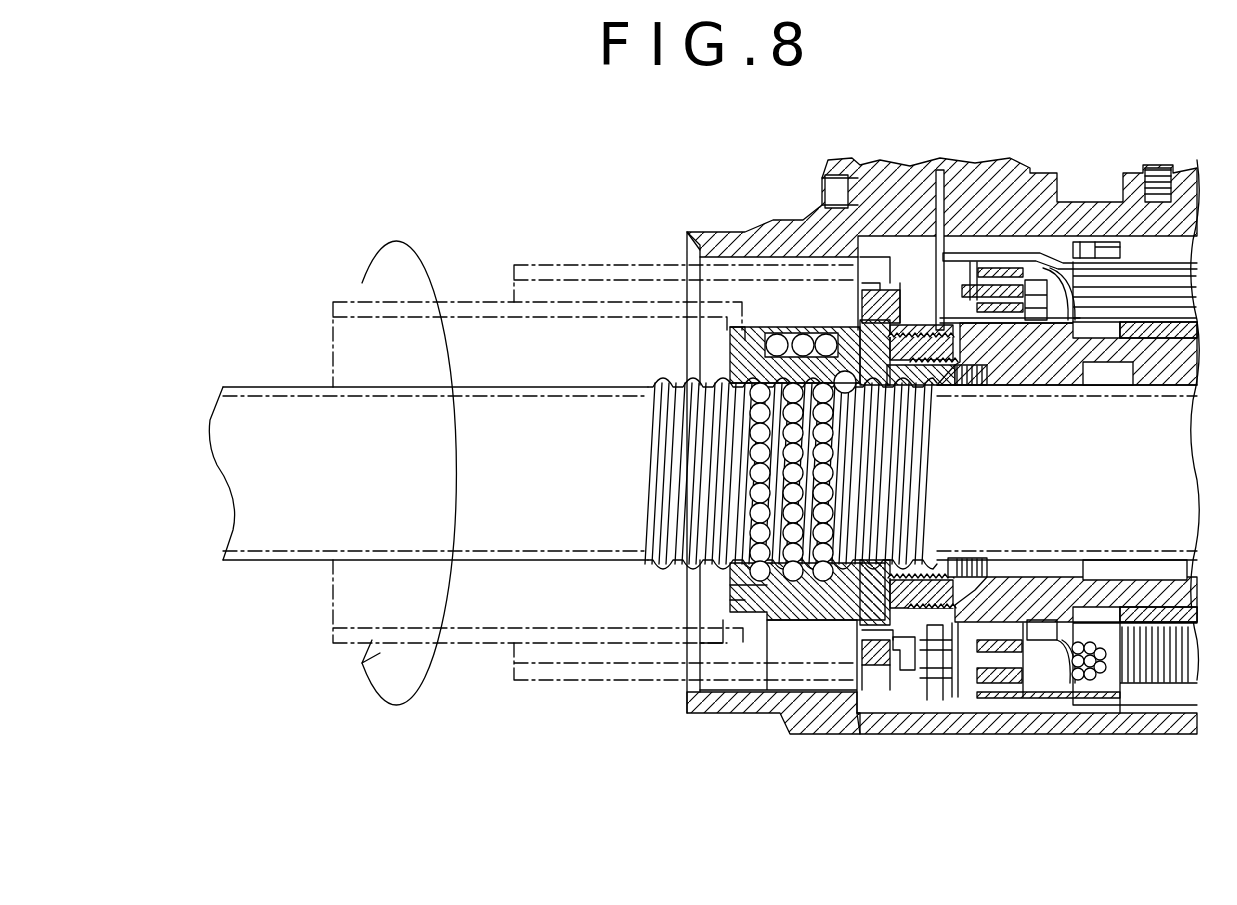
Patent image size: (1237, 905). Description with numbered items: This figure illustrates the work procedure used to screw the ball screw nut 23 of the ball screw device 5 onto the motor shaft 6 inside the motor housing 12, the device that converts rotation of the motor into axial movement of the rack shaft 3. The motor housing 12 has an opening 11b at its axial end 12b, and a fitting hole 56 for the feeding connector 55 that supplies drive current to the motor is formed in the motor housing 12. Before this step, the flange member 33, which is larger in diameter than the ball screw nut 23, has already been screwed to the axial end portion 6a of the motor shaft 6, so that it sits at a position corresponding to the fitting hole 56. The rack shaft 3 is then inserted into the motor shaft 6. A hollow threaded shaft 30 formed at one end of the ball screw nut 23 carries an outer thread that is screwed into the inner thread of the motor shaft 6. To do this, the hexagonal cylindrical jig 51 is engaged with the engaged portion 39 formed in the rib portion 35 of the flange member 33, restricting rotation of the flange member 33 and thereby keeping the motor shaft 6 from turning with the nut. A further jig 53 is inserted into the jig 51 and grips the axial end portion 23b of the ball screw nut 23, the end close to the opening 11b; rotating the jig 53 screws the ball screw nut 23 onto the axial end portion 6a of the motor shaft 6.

The rack shaft 3 is at (300, 490).
The ball screw device 5 is at (709, 362).
The motor shaft 6 is at (1135, 378).
The axial end portion of the motor shaft 6a is at (947, 388).
The opening 11b is at (713, 715).
The motor housing 12 is at (1052, 737).
The axial end of the motor housing 12b is at (752, 700).
The ball screw nut 23 is at (810, 620).
The axial end portion of the ball screw nut 23b is at (735, 606).
The threaded shaft 30 is at (938, 550).
The flange member 33 is at (927, 647).
The rib portion 35 is at (913, 660).
The engaged portion 39 is at (893, 292).
The cylindrical jig 51 is at (546, 265).
The jig 53 is at (467, 300).
The feeding connector 55 is at (1048, 176).
The fitting hole 56 is at (835, 213).